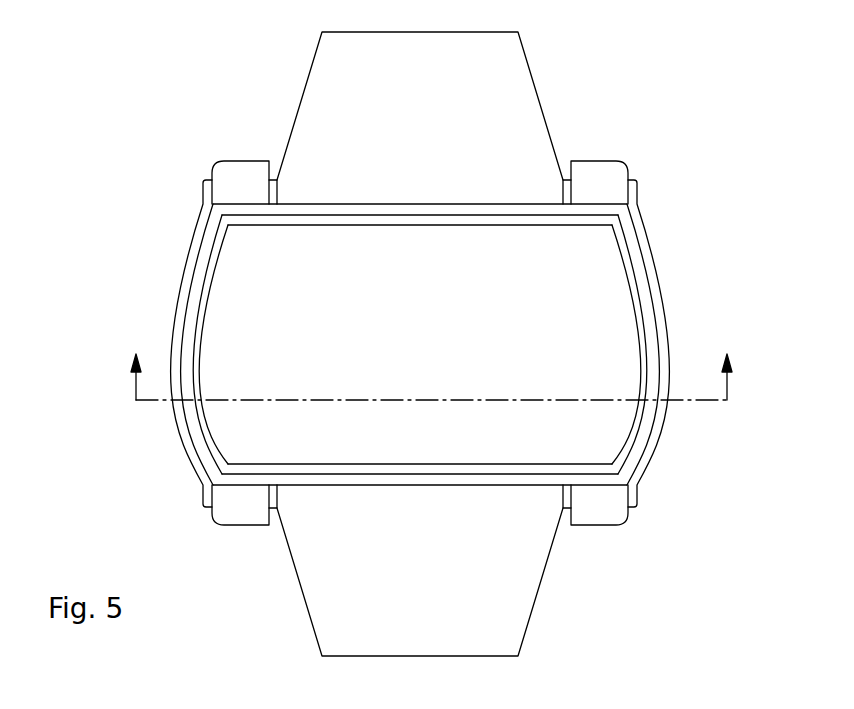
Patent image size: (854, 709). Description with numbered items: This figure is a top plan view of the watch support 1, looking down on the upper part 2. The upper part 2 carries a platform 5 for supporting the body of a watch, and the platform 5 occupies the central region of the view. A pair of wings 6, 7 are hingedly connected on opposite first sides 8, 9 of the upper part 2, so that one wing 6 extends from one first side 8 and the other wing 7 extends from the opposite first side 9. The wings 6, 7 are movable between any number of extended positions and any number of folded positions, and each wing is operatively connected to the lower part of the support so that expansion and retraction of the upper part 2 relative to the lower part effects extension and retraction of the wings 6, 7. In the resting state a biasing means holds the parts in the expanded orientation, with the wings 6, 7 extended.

The watch support 1 is at (562, 85).
The upper part 2 is at (602, 283).
The platform 5 is at (401, 311).
The wing 6 is at (402, 108).
The wing 7 is at (393, 576).
The first side 8 is at (598, 210).
The first side 9 is at (242, 482).